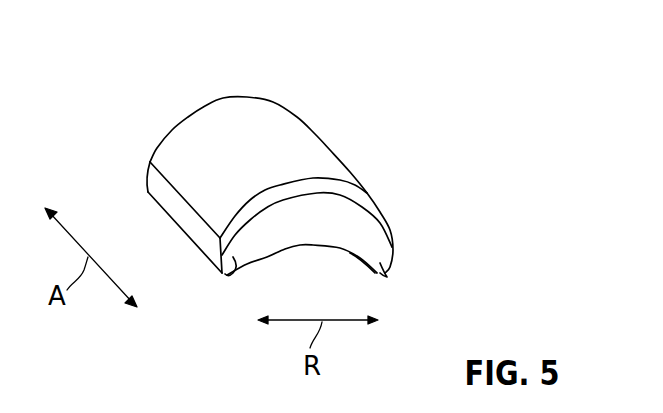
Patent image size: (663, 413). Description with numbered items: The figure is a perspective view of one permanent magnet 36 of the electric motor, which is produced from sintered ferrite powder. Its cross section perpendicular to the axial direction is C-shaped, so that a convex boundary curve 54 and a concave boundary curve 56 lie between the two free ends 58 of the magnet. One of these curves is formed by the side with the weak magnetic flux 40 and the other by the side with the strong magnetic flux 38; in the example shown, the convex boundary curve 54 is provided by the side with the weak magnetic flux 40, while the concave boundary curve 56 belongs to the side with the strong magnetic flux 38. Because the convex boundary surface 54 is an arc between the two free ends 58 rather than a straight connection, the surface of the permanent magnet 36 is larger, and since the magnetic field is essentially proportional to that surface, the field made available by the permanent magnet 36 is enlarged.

The permanent magnet 36 is at (432, 110).
The side with the weak magnetic flux 40 is at (268, 117).
The convex boundary curve 54 is at (220, 117).
The side with the strong magnetic flux 38 is at (267, 258).
The concave boundary curve 56 is at (305, 247).
The free ends 58 is at (233, 270).